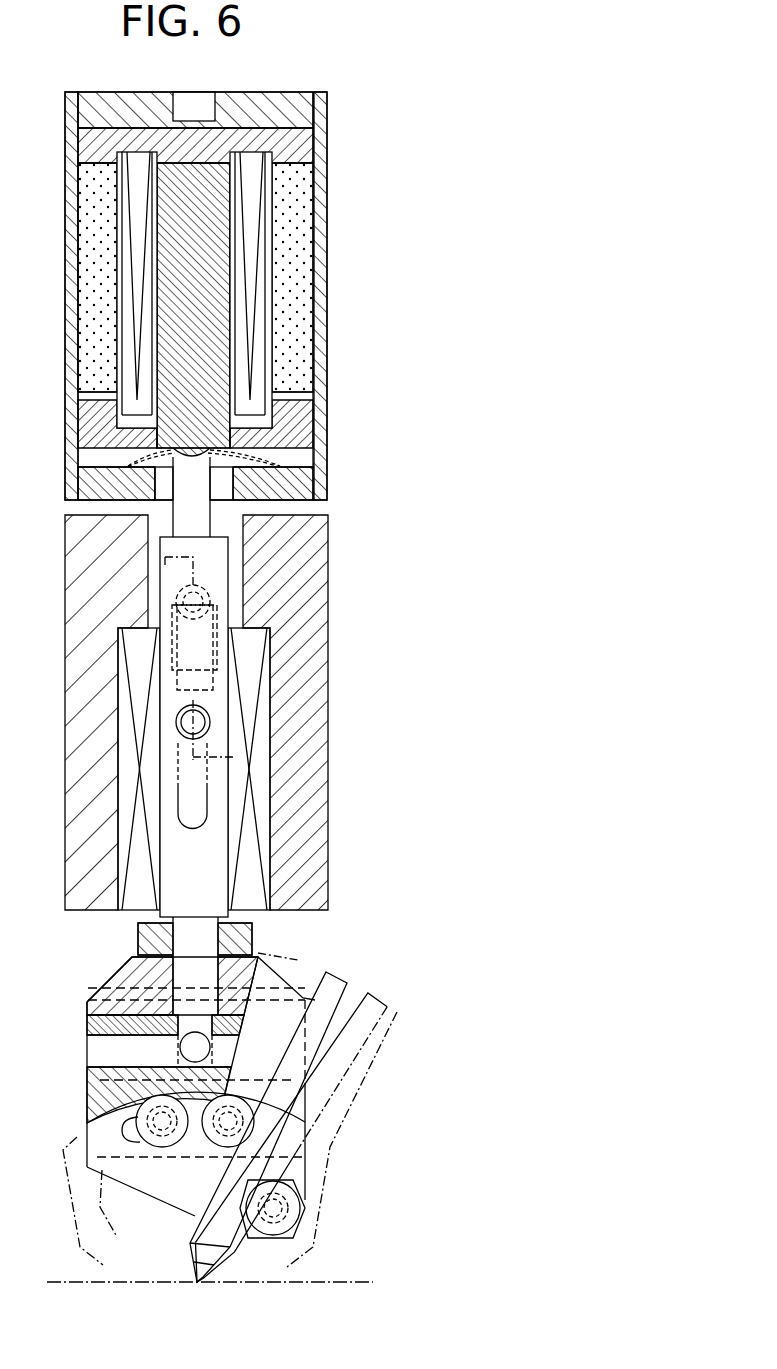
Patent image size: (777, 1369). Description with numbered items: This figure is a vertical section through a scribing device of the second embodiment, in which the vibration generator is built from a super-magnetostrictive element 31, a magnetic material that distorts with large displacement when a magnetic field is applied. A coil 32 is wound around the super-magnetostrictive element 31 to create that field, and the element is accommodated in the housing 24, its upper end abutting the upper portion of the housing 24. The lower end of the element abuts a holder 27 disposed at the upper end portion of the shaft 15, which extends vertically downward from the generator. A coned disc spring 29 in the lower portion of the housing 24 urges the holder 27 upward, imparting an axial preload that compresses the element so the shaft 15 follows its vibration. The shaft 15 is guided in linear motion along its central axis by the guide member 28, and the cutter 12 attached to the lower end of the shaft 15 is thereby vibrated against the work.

The housing 24 is at (328, 150).
The coil 32 is at (265, 240).
The super-magnetostrictive element 31 is at (218, 292).
The holder 27 is at (233, 428).
The spring 29 is at (250, 463).
The shaft 15 is at (213, 697).
The guide member 28 is at (267, 713).
The cutter 12 is at (203, 1277).